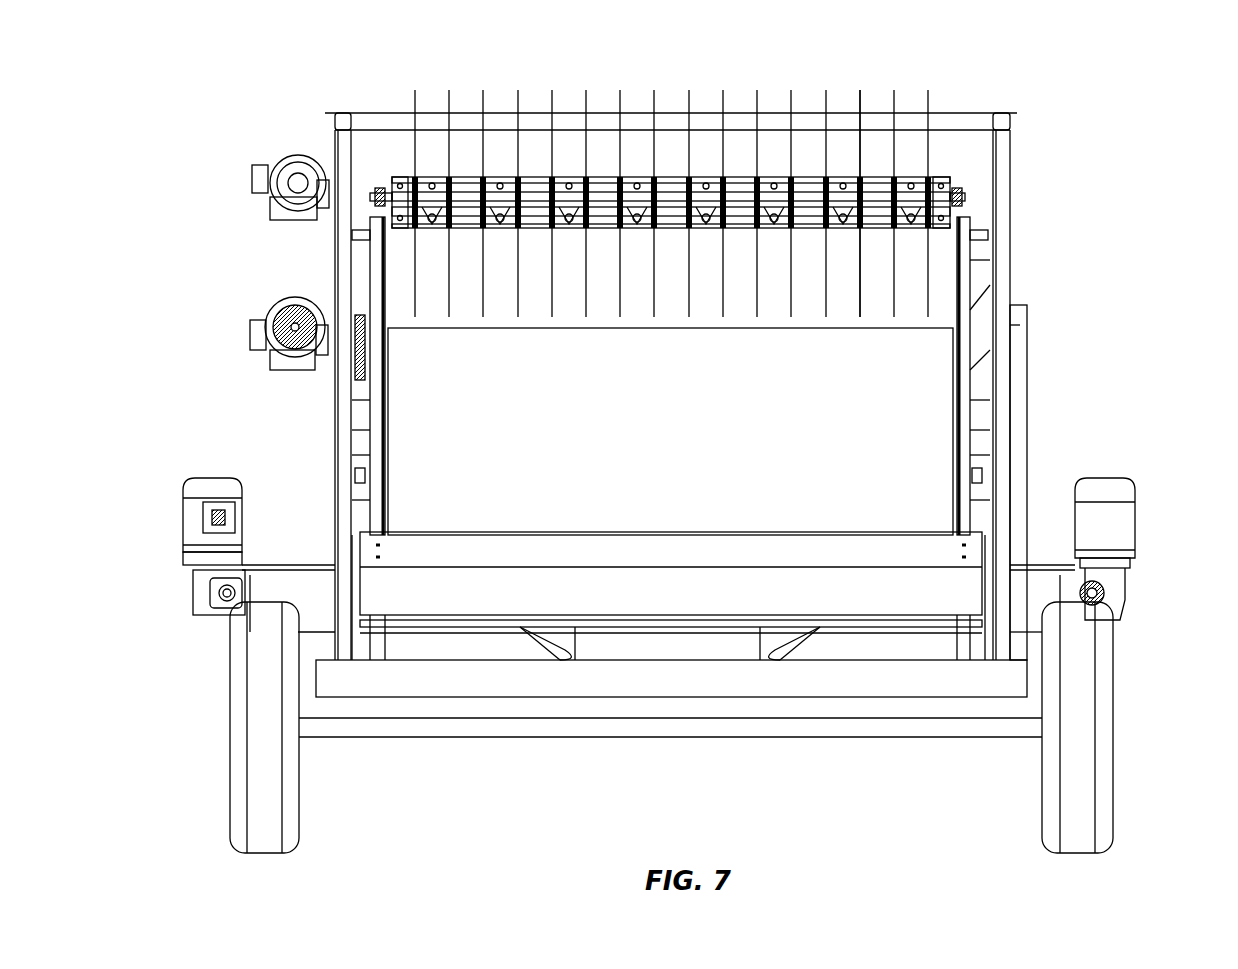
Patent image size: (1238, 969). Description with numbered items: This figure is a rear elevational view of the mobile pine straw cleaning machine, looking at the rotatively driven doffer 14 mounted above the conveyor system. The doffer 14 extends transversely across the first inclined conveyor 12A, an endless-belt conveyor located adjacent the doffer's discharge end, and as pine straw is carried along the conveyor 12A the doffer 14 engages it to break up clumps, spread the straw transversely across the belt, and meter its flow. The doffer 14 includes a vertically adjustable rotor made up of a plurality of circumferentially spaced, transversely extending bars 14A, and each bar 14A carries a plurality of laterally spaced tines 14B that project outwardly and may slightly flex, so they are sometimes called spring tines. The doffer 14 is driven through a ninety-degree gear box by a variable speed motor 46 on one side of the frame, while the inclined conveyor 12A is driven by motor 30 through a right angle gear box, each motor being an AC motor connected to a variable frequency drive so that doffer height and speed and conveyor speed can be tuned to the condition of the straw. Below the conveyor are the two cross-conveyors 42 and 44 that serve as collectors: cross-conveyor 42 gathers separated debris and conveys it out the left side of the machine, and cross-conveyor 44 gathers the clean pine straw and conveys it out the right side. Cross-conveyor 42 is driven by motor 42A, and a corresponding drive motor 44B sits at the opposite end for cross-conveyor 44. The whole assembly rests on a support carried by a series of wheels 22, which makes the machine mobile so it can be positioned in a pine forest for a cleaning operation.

The first inclined conveyor 12A is at (893, 430).
The doffer 14 is at (953, 162).
The bar 14A is at (805, 178).
The tine 14B is at (860, 100).
The wheel 22 is at (267, 820).
The motor 30 is at (275, 325).
The cross-conveyor 42 is at (297, 565).
The motor 42A is at (195, 548).
The cross-conveyor 44 is at (1048, 565).
The drive motor 44B is at (1105, 520).
The variable speed motor 46 is at (285, 180).